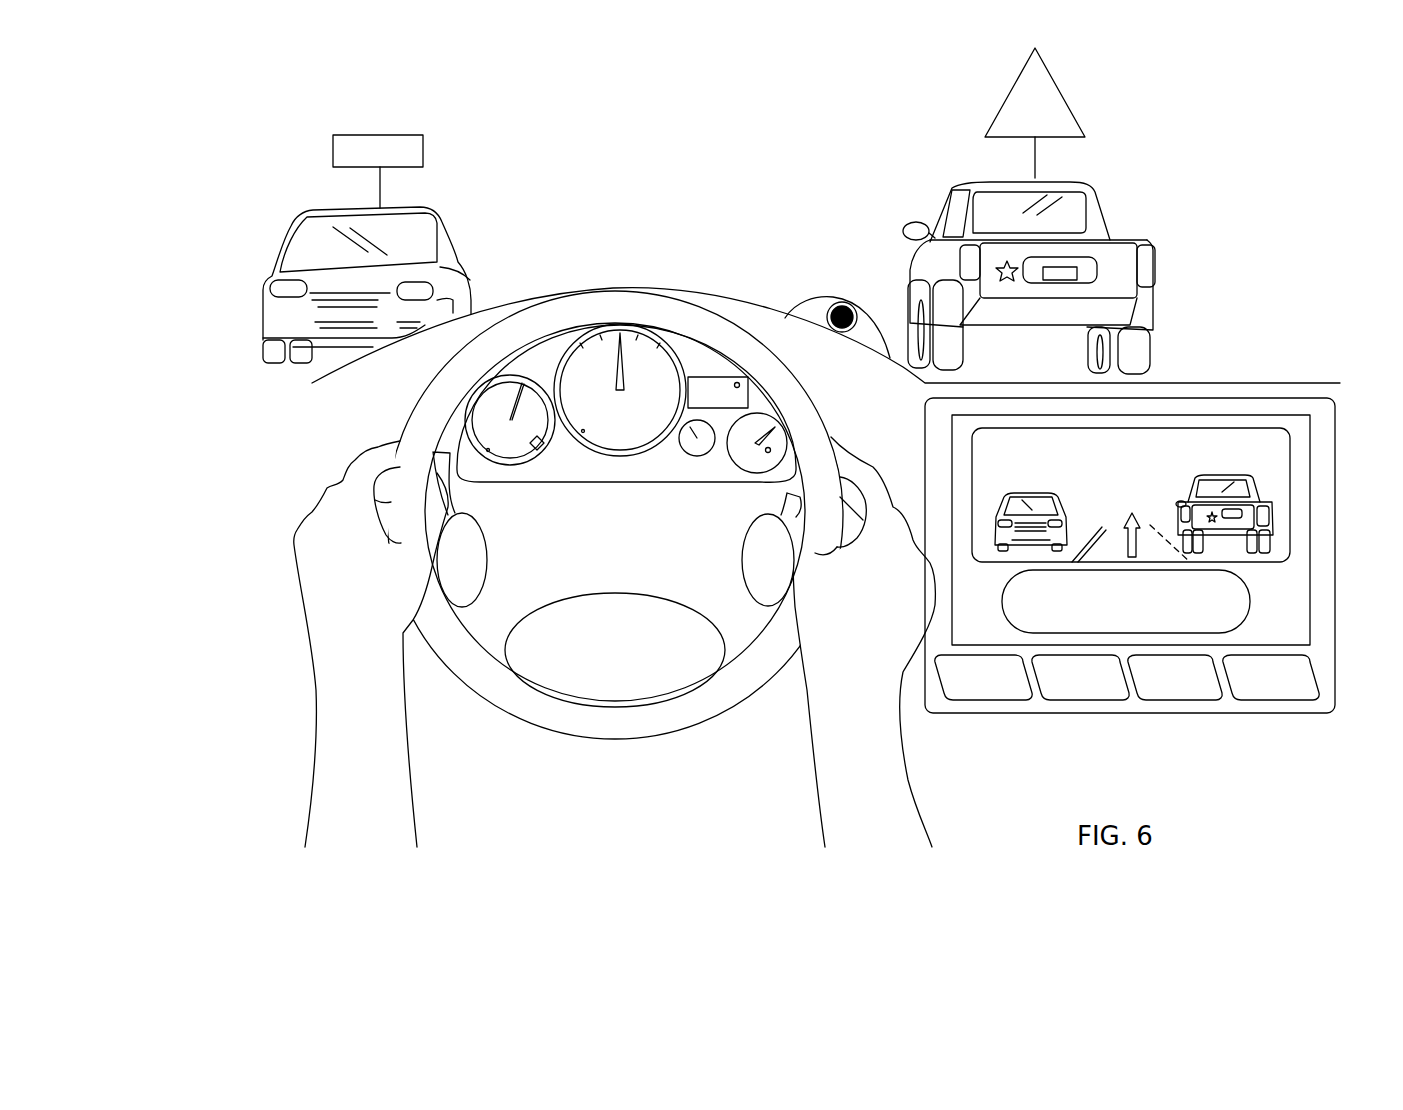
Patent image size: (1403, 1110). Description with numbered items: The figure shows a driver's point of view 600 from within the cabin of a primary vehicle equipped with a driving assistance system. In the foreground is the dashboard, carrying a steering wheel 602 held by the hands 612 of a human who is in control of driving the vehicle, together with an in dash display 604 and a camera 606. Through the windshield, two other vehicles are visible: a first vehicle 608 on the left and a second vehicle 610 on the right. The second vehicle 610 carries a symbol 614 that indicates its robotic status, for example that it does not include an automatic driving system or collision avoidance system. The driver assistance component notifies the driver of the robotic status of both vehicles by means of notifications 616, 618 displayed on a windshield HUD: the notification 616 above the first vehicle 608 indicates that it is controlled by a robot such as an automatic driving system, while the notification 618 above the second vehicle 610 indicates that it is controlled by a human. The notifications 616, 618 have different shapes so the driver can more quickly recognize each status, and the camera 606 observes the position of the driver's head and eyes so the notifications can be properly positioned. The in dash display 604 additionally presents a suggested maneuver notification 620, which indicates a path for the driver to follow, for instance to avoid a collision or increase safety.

The driver's point of view 600 is at (1257, 157).
The steering wheel 602 is at (621, 297).
The in dash display 604 is at (1222, 448).
The camera 606 is at (837, 295).
The first vehicle 608 is at (453, 238).
The second vehicle 610 is at (968, 177).
The hands 612 is at (296, 518).
The symbol 614 is at (996, 272).
The notification 616 is at (413, 140).
The notification 618 is at (1073, 108).
The suggested maneuver notification 620 is at (1133, 510).